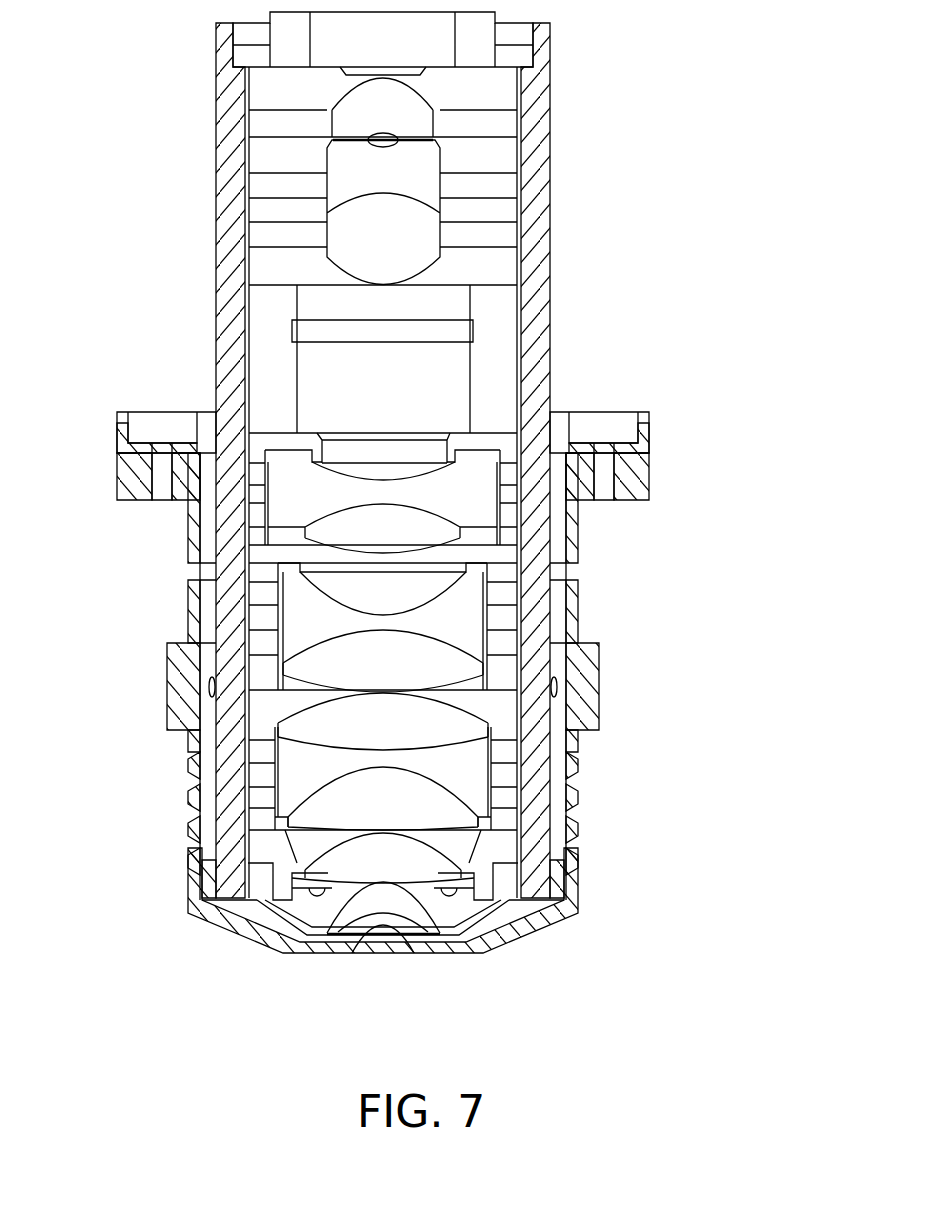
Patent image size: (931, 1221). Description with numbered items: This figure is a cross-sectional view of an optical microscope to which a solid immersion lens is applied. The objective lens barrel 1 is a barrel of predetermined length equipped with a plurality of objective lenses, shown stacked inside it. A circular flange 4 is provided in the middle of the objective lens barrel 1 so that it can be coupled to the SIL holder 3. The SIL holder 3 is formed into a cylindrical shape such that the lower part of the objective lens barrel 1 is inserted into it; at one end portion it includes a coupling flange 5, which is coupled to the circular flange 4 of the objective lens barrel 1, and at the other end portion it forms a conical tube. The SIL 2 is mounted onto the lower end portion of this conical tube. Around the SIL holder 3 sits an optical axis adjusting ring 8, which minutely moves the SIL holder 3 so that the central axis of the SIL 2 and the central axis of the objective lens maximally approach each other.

The objective lens barrel 1 is at (590, 191).
The SIL 2 is at (392, 943).
The SIL holder 3 is at (628, 653).
The circular flange 4 is at (640, 440).
The coupling flange 5 is at (648, 500).
The optical axis adjusting ring 8 is at (176, 686).